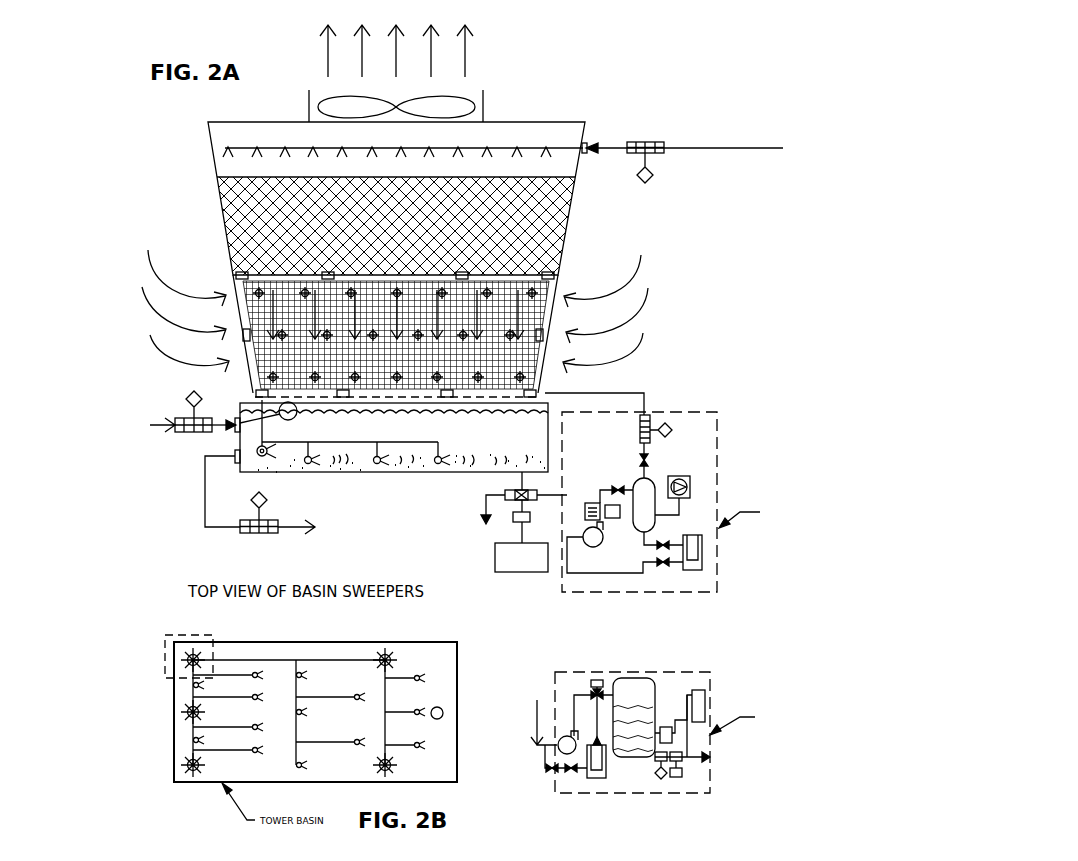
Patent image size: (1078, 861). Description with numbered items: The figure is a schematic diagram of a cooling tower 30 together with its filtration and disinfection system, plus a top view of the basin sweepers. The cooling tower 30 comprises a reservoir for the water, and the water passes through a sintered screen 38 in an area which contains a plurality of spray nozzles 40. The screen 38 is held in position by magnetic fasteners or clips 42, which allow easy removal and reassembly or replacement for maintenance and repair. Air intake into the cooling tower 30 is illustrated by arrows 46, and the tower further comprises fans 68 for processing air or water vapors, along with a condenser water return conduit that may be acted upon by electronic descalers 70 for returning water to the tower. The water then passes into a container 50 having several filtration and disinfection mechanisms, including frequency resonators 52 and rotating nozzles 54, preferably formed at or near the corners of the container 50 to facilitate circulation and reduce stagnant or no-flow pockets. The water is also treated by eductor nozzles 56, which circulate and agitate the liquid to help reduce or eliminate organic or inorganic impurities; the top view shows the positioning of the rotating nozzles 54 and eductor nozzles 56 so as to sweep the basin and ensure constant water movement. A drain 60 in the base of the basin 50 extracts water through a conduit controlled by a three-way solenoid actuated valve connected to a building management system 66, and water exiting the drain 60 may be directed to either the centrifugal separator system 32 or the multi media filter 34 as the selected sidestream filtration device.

In FIG. 2A, the cooling tower 30 is at (187, 155).
In FIG. 2A, the centrifugal separator system 32 is at (688, 526).
In FIG. 2A, the multi media filter 34 is at (669, 744).
In FIG. 2A, the sintered screen 38 is at (259, 352).
In FIG. 2A, the spray nozzles 40 is at (525, 376).
In FIG. 2A, the magnetic fasteners or clips 42 is at (256, 395).
In FIG. 2A, the air intake arrows 46 is at (395, 298).
In FIG. 2A, the container 50 is at (552, 406).
In FIG. 2A, the frequency resonators 52 is at (183, 415).
In FIG. 2A, the rotating nozzles 54 is at (260, 454).
In FIG. 2B, the rotating nozzles 54 is at (194, 654).
In FIG. 2A, the eductor nozzles 56 is at (307, 465).
In FIG. 2B, the eductor nozzles 56 is at (255, 672).
In FIG. 2A, the drain 60 is at (522, 476).
In FIG. 2B, the drain 60 is at (440, 706).
In FIG. 2A, the building management system 66 is at (506, 575).
In FIG. 2A, the fans 68 is at (470, 98).
In FIG. 2A, the electronic descalers 70 is at (682, 135).